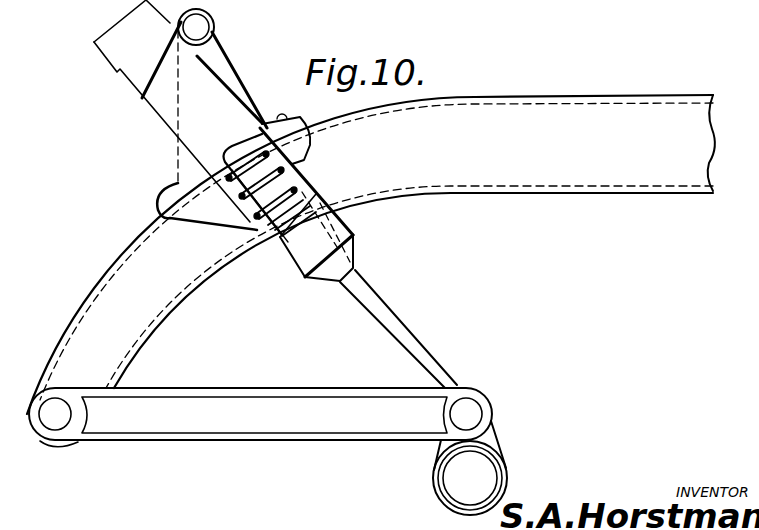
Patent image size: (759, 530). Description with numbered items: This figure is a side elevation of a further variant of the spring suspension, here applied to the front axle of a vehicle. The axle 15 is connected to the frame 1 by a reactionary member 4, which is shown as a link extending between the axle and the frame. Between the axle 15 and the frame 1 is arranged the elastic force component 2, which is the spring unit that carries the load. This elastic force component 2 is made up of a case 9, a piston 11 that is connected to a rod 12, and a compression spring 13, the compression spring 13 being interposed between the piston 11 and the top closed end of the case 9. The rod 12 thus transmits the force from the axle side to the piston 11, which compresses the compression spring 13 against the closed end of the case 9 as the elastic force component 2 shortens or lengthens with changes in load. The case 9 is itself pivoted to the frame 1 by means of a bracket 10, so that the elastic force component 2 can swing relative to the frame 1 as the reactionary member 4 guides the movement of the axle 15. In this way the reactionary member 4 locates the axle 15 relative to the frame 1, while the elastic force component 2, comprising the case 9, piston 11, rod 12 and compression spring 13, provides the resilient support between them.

The frame 1 is at (467, 163).
The elastic force component 2 is at (302, 255).
The reactionary member 4 is at (287, 410).
The case 9 is at (160, 105).
The bracket 10 is at (185, 173).
The piston 11 is at (287, 187).
The rod 12 is at (307, 202).
The compression spring 13 is at (255, 160).
The axle 15 is at (468, 477).